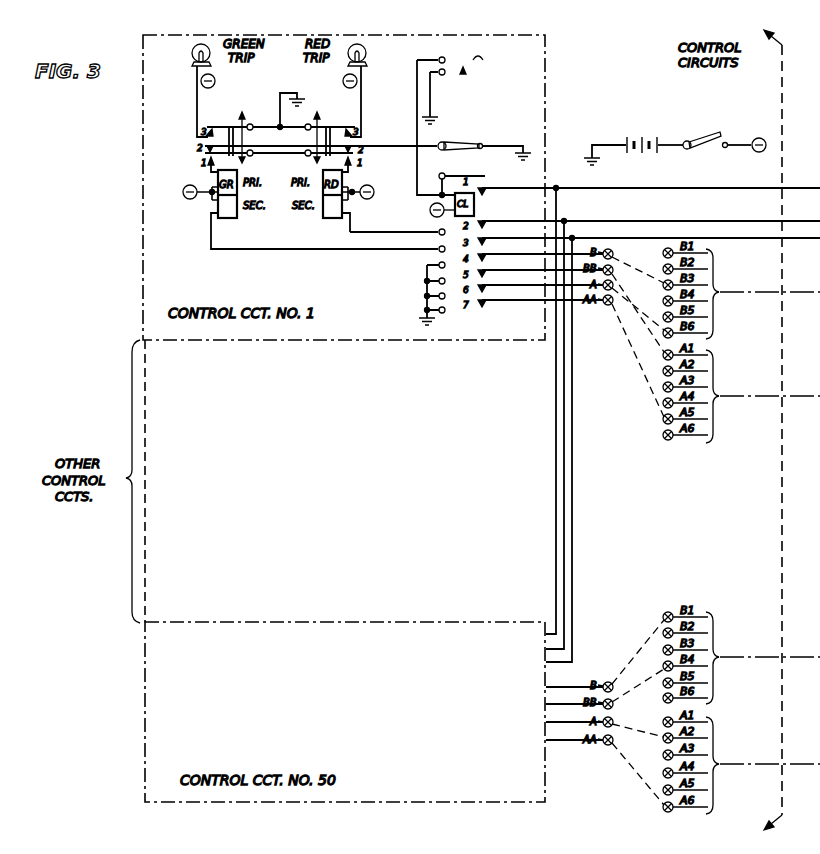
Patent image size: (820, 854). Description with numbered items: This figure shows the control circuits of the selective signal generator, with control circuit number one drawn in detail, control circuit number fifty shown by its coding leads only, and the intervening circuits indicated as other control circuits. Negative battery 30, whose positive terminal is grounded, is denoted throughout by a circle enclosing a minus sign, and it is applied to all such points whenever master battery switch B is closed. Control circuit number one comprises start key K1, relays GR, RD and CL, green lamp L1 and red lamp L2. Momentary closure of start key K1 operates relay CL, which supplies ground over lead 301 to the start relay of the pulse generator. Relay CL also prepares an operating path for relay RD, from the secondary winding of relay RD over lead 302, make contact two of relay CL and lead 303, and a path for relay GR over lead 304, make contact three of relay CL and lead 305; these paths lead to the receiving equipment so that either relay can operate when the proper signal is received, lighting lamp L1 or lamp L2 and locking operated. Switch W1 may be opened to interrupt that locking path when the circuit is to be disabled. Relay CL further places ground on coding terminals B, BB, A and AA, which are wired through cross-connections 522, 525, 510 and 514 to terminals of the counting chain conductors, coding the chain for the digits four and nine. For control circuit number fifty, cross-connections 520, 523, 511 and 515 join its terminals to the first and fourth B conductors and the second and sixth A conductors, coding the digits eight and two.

The battery 30 is at (642, 133).
The master battery switch B is at (715, 143).
The lead 301 is at (623, 187).
The lead 303 is at (594, 220).
The lead 305 is at (616, 238).
The lead 302 is at (402, 232).
The lead 304 is at (290, 251).
The cross-connection 522 is at (643, 271).
The cross-connection 525 is at (648, 288).
The cross-connection 510 is at (627, 328).
The cross-connection 514 is at (630, 353).
The cross-connection 520 is at (630, 658).
The cross-connection 523 is at (640, 684).
The cross-connection 511 is at (630, 730).
The cross-connection 515 is at (630, 770).
The green lamp L1 is at (192, 58).
The red lamp L2 is at (366, 58).
The start key K1 is at (464, 87).
The switch W1 is at (459, 143).